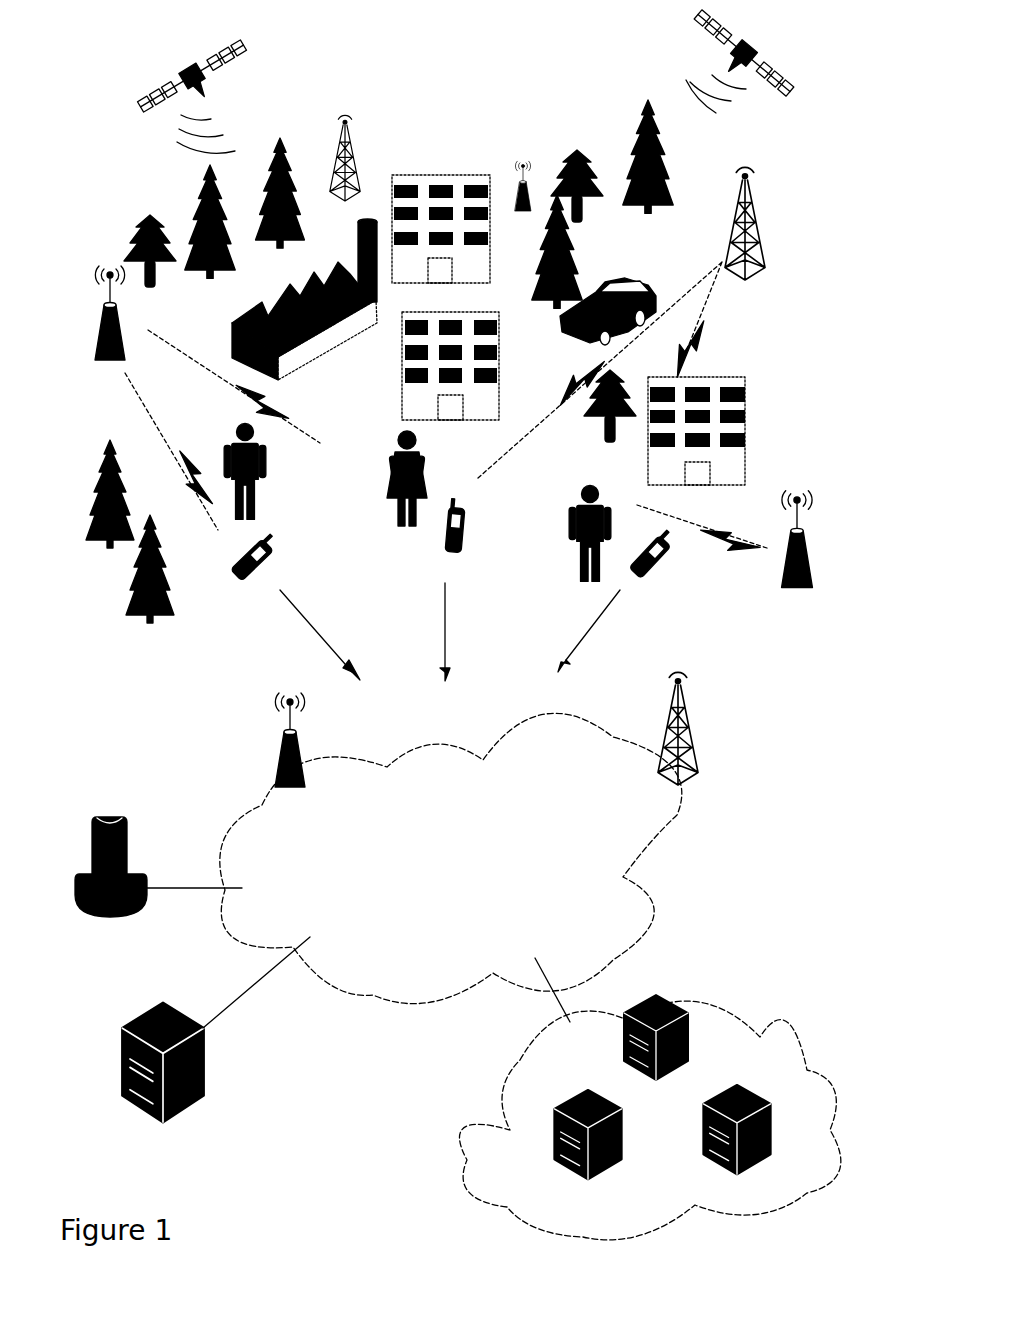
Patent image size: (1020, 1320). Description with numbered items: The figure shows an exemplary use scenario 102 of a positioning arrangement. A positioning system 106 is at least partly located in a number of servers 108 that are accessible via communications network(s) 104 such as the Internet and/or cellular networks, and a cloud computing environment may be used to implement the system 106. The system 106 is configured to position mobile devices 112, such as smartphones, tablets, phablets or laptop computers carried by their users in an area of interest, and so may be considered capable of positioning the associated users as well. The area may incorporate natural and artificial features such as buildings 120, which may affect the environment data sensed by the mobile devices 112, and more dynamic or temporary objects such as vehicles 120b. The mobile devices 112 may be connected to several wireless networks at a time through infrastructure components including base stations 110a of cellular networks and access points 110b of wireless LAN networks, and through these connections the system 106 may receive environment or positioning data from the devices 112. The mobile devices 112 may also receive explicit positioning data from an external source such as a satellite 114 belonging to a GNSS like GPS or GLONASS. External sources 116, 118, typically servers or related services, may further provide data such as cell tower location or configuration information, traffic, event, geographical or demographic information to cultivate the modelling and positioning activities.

The use scenario 102 is at (116, 33).
The communications network 104 is at (260, 793).
The positioning system 106 is at (649, 1109).
The server 108 is at (563, 1097).
The base station 110a is at (360, 140).
The access point 110b is at (527, 160).
The mobile device 112 is at (440, 548).
The satellite 114 is at (235, 55).
The external source 116 is at (127, 813).
The external source 118 is at (185, 1007).
The building 120 is at (747, 377).
The vehicle 120b is at (627, 273).